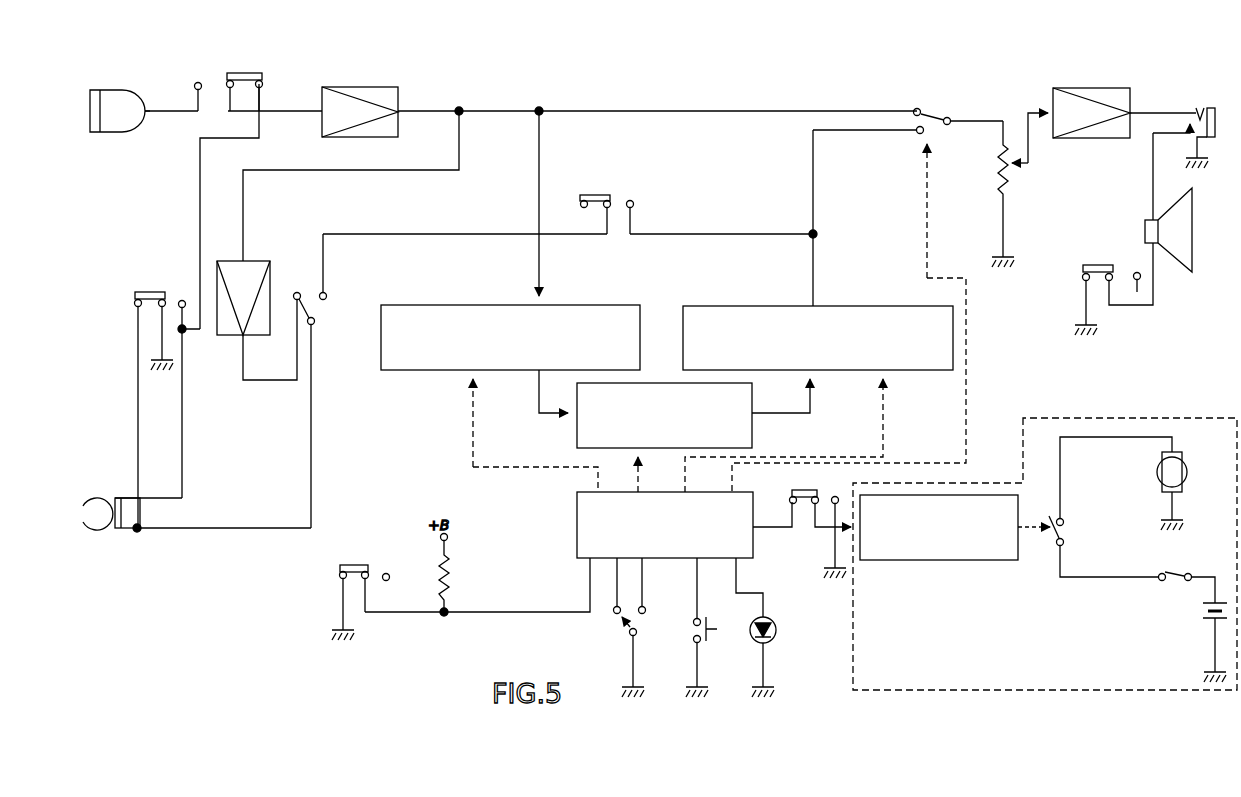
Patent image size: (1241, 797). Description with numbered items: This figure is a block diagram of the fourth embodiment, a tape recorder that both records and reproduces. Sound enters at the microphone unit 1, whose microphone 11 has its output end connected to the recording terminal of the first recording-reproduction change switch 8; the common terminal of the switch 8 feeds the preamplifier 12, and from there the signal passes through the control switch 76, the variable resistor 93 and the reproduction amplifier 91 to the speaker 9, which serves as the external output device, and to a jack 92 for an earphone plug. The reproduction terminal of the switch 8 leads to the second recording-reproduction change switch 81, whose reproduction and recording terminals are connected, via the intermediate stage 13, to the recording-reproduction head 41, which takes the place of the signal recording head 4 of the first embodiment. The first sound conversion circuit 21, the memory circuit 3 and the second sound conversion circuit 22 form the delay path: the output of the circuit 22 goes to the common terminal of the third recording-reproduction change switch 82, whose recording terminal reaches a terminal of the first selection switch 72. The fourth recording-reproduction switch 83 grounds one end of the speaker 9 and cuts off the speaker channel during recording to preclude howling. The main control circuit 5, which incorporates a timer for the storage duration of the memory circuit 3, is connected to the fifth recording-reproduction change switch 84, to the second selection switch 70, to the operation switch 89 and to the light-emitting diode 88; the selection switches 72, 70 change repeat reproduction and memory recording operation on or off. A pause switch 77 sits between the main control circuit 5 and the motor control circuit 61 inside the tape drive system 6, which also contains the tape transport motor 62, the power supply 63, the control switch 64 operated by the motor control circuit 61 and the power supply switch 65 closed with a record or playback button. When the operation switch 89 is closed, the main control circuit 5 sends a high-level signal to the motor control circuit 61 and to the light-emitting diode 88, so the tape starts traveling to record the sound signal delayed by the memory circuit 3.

The microphone 1 is at (110, 80).
The microphone 11 is at (140, 94).
The first recording-reproduction change switch 8 is at (245, 72).
The preamplifier 12 is at (380, 87).
The amplifier 13 is at (258, 262).
The second recording-reproduction change switch 81 is at (154, 292).
The first selection switch 72 is at (325, 312).
The signal recording head 4 is at (132, 470).
The recording-reproduction head 41 is at (101, 499).
The third recording-reproduction change switch 82 is at (592, 195).
The first sound conversion circuit 21 is at (560, 305).
The second sound conversion circuit 22 is at (858, 306).
The memory circuit 3 is at (648, 383).
The main control circuit 5 is at (660, 492).
The control switch 76 is at (943, 108).
The variable resistor 93 is at (1003, 172).
The reproduction amplifier 91 is at (1118, 88).
The jack 92 is at (1203, 105).
The speaker 9 is at (1200, 248).
The fourth recording-reproduction switch 83 is at (1098, 265).
The pause switch 77 is at (805, 490).
The system for driving a signal recording medium 6 is at (1045, 537).
The motor control circuit 61 is at (965, 560).
The tape transport motor 62 is at (1187, 470).
The control switch 64 is at (1050, 515).
The power supply switch 65 is at (1163, 563).
The power supply 63 is at (1225, 601).
The fifth recording-reproduction change switch 84 is at (350, 565).
The second selection switch 70 is at (612, 626).
The operation switch 89 is at (708, 642).
The light-emitting diode 88 is at (776, 636).